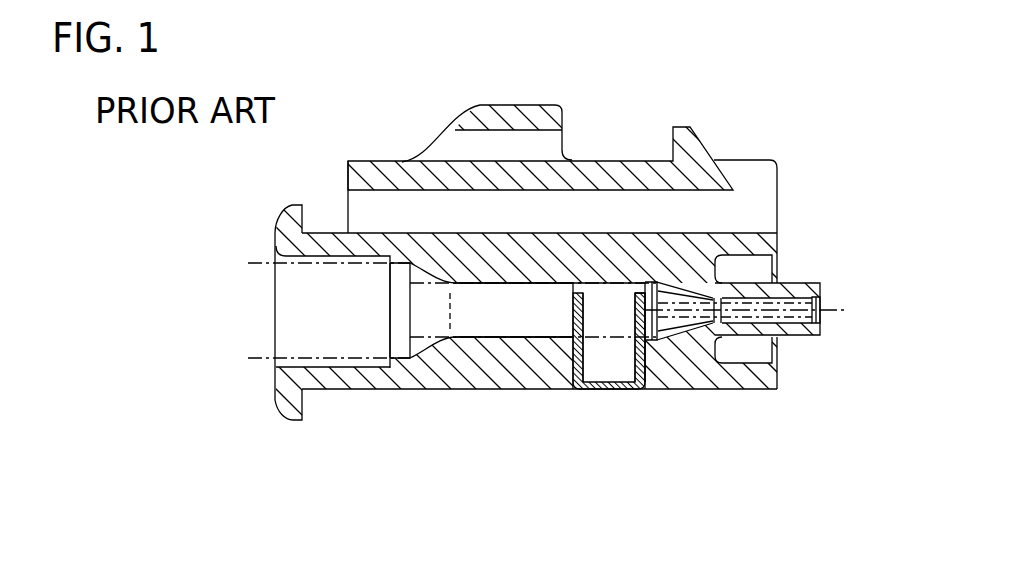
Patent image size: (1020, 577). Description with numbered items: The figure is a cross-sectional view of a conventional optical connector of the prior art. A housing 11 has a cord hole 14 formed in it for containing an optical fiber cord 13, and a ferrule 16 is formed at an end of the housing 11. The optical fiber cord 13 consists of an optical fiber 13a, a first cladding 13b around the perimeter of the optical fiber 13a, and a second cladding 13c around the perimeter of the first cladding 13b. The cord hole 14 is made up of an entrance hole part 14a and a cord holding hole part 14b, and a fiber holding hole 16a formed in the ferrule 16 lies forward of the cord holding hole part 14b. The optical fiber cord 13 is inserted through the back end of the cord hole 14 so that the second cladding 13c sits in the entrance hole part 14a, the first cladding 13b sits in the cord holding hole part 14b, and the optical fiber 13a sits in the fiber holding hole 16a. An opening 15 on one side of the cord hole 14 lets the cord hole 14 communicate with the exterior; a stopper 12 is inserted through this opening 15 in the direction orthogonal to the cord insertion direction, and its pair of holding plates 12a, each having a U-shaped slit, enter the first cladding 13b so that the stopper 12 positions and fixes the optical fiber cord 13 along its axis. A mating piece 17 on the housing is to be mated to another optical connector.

The housing 11 is at (725, 392).
The stopper 12 is at (608, 402).
The holding plates 12a is at (630, 350).
The optical fiber cord 13 is at (252, 243).
The optical fiber 13a is at (752, 308).
The first cladding 13b is at (520, 337).
The second cladding 13c is at (337, 352).
The cord hole 14 is at (462, 399).
The entrance hole part 14a is at (352, 355).
The cord holding hole part 14b is at (484, 330).
The opening 15 is at (649, 385).
The ferrule 16 is at (808, 340).
The fiber holding hole 16a is at (822, 310).
The mating piece 17 is at (620, 157).